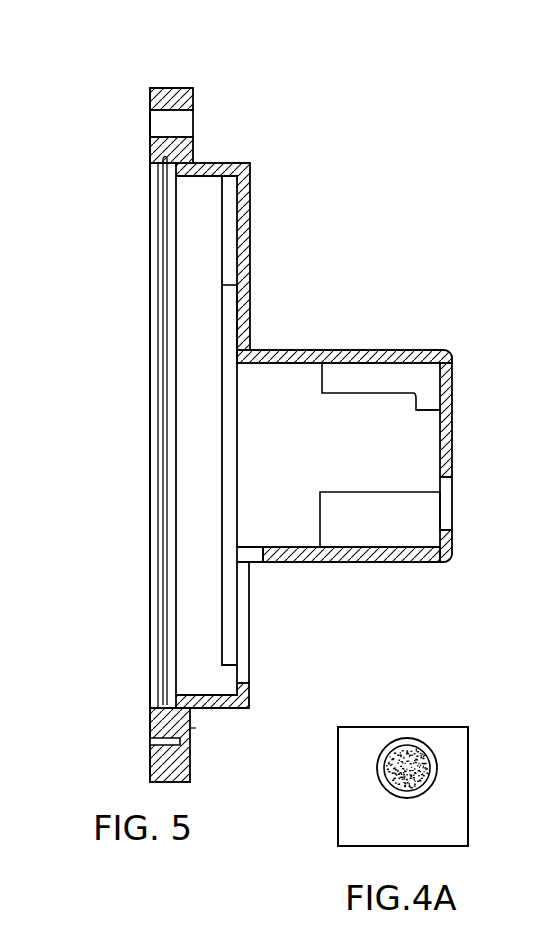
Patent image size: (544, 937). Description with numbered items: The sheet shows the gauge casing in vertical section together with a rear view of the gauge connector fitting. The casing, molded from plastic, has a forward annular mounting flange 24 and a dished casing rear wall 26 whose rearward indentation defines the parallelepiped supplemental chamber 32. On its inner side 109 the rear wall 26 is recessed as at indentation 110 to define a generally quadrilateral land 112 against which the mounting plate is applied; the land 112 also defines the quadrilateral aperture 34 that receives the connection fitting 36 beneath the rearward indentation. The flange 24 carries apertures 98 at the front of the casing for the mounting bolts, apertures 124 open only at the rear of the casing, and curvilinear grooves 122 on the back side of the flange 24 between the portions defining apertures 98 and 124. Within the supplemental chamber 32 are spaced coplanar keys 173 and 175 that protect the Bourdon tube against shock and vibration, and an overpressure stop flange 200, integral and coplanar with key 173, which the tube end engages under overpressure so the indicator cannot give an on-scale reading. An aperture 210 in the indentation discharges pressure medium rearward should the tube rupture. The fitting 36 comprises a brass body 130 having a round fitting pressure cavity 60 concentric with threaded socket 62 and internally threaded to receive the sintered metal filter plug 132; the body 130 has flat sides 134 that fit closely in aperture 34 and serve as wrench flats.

In FIG. 5, the forward annular mounting flange 24 is at (167, 90).
In FIG. 5, the casing rear wall 26 is at (250, 262).
In FIG. 5, the supplemental chamber 32 is at (327, 420).
In FIG. 5, the aperture 34 is at (240, 678).
In FIG. 4A, the connection fitting 36 is at (338, 846).
In FIG. 4A, the fitting pressure cavity 60 is at (402, 753).
In FIG. 4A, the threaded socket 62 is at (430, 762).
In FIG. 5, the aperture 98 is at (183, 124).
In FIG. 5, the inner side 109 is at (220, 250).
In FIG. 5, the indentation 110 is at (237, 325).
In FIG. 5, the land 112 is at (237, 347).
In FIG. 5, the curvilinear groove 122 is at (196, 84).
In FIG. 5, the aperture 124 is at (180, 741).
In FIG. 4A, the fitting body 130 is at (448, 808).
In FIG. 4A, the plug 132 is at (412, 750).
In FIG. 4A, the flat side 134 is at (468, 758).
In FIG. 5, the key 173 is at (343, 372).
In FIG. 5, the key 175 is at (397, 523).
In FIG. 5, the overpressure stop flange 200 is at (424, 397).
In FIG. 5, the aperture 210 is at (447, 502).